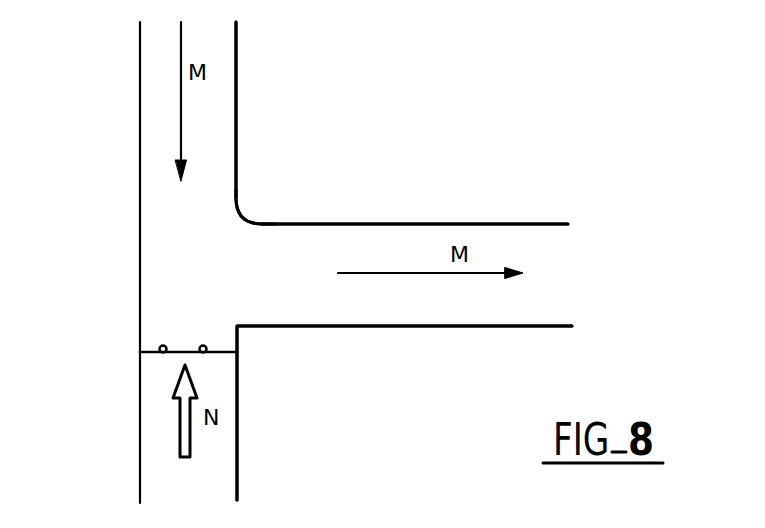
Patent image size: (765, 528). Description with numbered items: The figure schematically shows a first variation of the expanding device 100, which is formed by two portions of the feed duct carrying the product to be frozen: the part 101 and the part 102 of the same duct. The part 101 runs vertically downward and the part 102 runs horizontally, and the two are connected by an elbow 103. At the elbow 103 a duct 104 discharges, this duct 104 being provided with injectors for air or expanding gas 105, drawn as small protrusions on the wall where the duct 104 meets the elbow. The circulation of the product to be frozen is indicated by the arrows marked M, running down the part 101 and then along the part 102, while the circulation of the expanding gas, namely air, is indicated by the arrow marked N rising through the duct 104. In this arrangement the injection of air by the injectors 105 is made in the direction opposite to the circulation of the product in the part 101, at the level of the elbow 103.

The expanding device 100 is at (346, 138).
The part of the feed duct 101 is at (236, 76).
The part of the feed duct 102 is at (444, 230).
The elbow 103 is at (238, 260).
The duct 104 is at (238, 388).
The injectors for air or expanding gas 105 is at (200, 347).